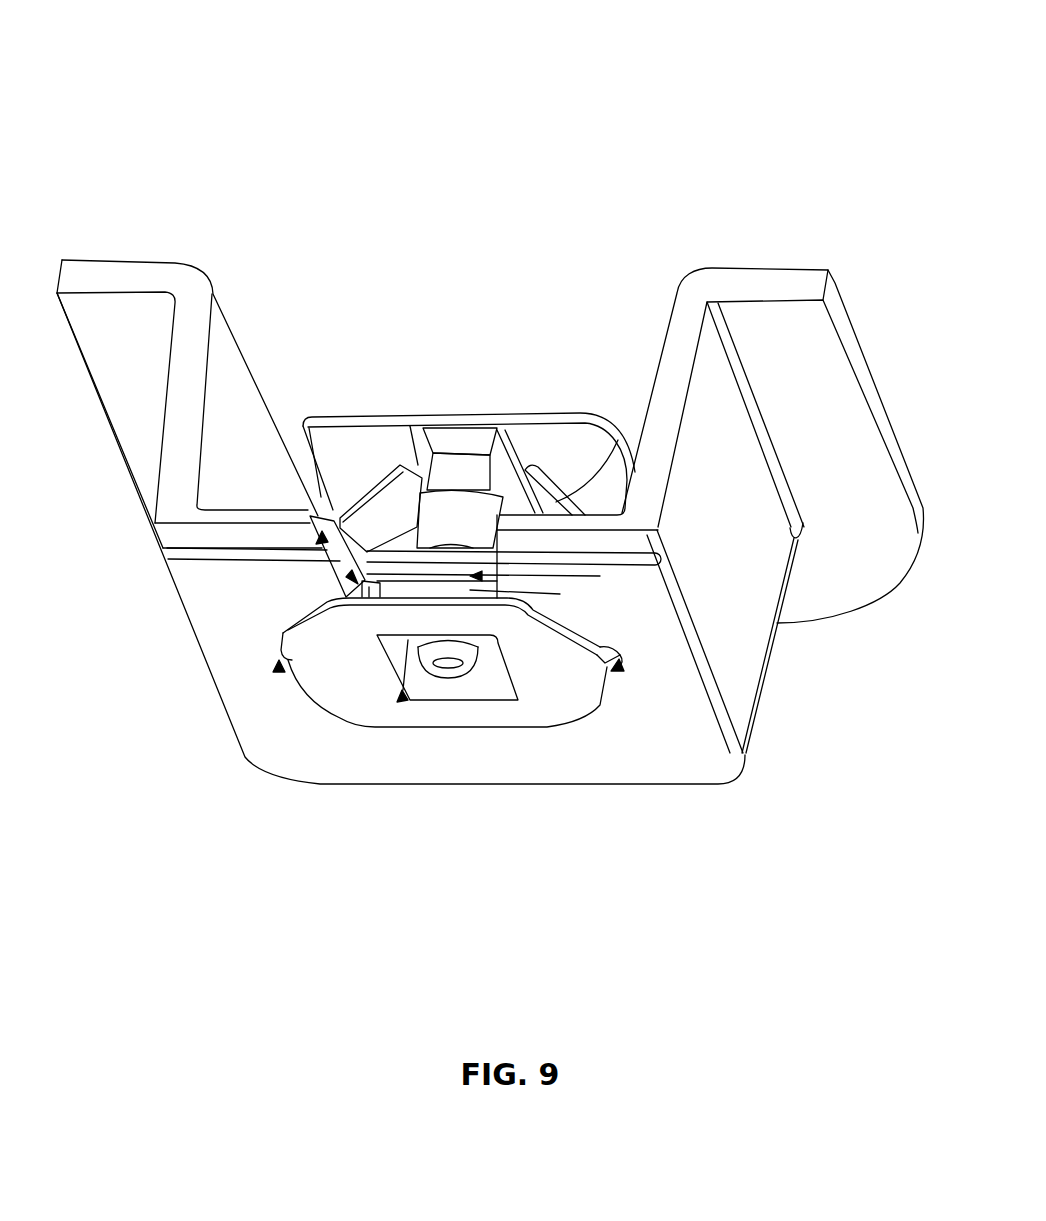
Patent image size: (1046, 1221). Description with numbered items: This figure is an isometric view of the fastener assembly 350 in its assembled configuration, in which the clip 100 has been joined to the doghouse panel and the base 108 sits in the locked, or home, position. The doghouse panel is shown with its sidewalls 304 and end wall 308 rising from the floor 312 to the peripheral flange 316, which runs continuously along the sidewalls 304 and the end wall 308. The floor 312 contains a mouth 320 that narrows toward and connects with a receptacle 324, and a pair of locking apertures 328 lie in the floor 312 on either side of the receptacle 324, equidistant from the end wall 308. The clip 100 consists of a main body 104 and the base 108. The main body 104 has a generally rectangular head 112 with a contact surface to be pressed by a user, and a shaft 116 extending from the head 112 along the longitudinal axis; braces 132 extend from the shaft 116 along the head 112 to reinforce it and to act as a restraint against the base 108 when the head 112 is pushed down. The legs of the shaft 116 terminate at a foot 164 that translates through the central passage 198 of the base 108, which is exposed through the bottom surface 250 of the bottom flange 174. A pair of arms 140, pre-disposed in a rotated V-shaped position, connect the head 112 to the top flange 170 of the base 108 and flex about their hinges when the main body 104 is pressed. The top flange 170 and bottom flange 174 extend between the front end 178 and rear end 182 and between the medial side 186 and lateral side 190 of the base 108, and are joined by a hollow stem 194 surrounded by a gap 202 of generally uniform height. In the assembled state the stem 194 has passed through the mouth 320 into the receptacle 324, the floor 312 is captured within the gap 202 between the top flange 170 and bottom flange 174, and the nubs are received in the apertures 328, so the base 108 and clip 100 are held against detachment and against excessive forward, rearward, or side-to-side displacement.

The fastener assembly 350 is at (165, 68).
The peripheral flange 316 is at (100, 337).
The sidewalls 304 is at (217, 433).
The mouth 320 is at (317, 548).
The receptacle 324 is at (348, 574).
The rear end 182 is at (355, 592).
The base 108 is at (275, 652).
The apertures 328 is at (308, 677).
The lateral side 190 is at (325, 695).
The bottom surface 250 is at (352, 693).
The head 112 is at (333, 417).
The arms 140 is at (389, 468).
The clip 100 is at (380, 414).
The shaft 116 is at (462, 468).
The braces 132 is at (465, 473).
The main body 104 is at (582, 423).
The top flange 170 is at (309, 515).
The central passage 198 is at (403, 703).
The foot 164 is at (457, 667).
The front end 178 is at (430, 718).
The bottom flange 174 is at (497, 718).
The end wall 308 is at (528, 790).
The floor 312 is at (573, 770).
The medial side 186 is at (598, 690).
The stem 194 is at (560, 594).
The gap 202 is at (600, 576).